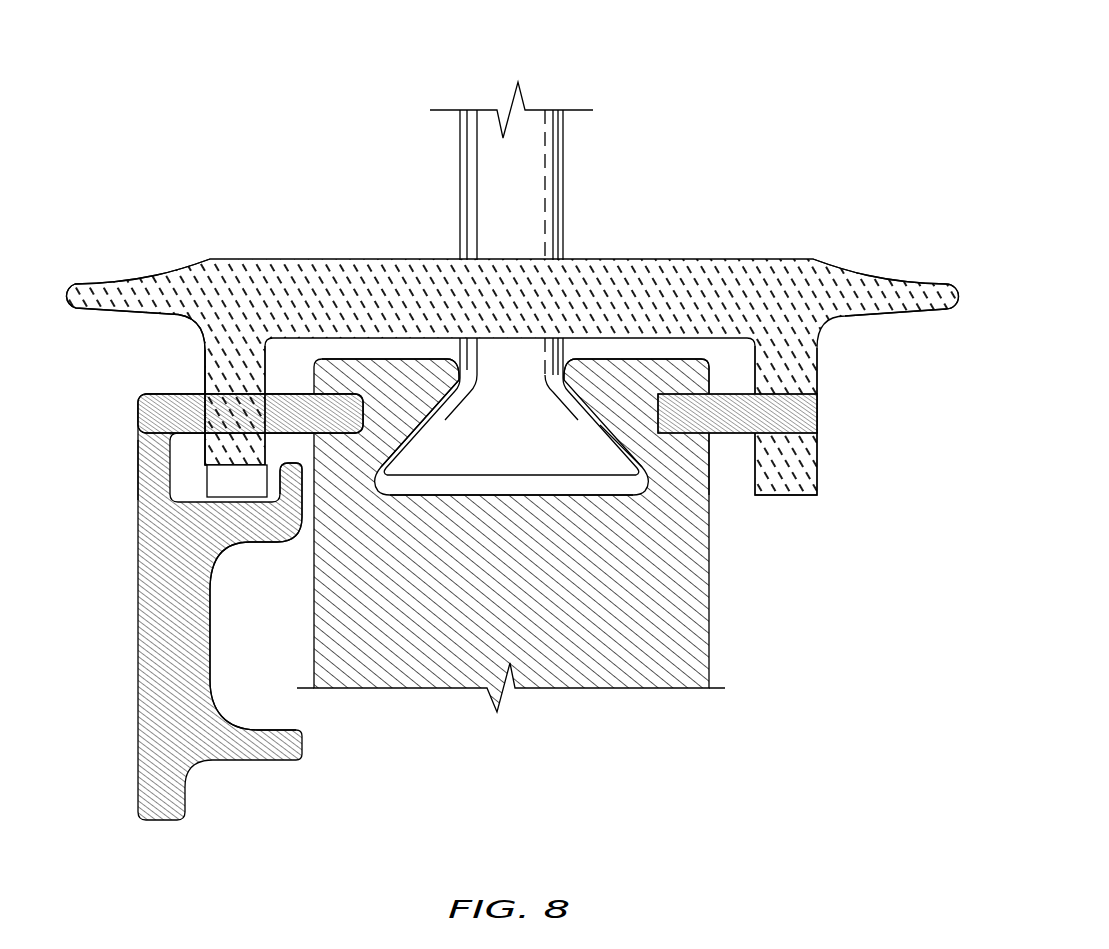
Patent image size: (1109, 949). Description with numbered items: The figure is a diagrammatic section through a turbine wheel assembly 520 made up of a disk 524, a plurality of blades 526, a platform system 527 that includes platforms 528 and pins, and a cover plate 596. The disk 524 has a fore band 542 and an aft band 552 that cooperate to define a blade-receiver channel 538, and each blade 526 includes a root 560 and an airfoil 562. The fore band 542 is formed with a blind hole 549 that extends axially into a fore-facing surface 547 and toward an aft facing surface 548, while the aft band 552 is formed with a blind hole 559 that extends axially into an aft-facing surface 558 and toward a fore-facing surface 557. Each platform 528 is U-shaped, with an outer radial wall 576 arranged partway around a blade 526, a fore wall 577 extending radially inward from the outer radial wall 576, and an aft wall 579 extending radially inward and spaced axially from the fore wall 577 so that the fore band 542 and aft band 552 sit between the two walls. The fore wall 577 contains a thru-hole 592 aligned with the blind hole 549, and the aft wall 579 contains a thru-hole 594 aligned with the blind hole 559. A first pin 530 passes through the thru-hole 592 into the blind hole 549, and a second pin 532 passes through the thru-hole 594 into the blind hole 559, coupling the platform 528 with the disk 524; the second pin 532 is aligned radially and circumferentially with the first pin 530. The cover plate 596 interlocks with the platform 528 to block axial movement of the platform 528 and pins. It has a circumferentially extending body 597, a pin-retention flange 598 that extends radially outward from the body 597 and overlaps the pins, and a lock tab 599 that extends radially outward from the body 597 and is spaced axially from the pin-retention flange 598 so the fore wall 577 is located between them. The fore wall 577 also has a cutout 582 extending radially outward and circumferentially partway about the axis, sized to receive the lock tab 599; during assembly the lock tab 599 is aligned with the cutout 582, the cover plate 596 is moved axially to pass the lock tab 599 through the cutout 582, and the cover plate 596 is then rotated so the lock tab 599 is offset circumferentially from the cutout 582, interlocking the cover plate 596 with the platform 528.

The turbine wheel assembly 520 is at (731, 103).
The disk 524 is at (716, 670).
The blade 526 is at (569, 166).
The platform system 527 is at (181, 246).
The platform 528 is at (263, 256).
The first pin 530 is at (290, 390).
The second pin 532 is at (823, 413).
The blade-receiver channel 538 is at (532, 479).
The fore band 542 is at (396, 465).
The fore-facing surface 547 is at (420, 360).
The aft facing surface 548 is at (459, 372).
The blind hole 549 is at (340, 385).
The aft band 552 is at (647, 353).
The fore-facing surface 557 is at (591, 408).
The aft-facing surface 558 is at (712, 384).
The blind hole 559 is at (677, 434).
The root 560 is at (599, 479).
The airfoil 562 is at (556, 218).
The outer radial wall 576 is at (832, 266).
The fore wall 577 is at (203, 353).
The aft wall 579 is at (823, 360).
The cutout 582 is at (214, 490).
The thru-hole 592 is at (237, 390).
The thru-hole 594 is at (818, 472).
The cover plate 596 is at (134, 692).
The body 597 is at (226, 565).
The pin-retention flange 598 is at (137, 462).
The lock tab 599 is at (306, 490).